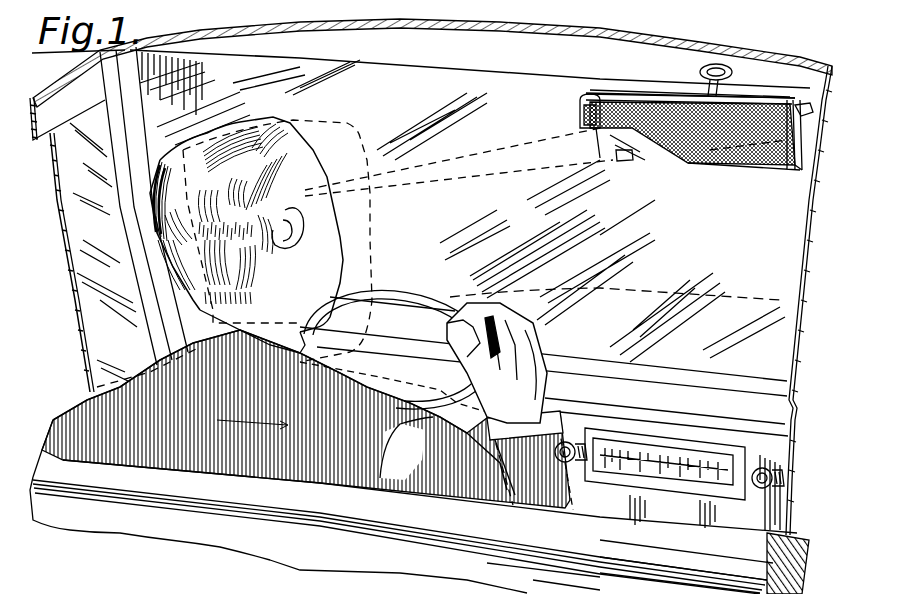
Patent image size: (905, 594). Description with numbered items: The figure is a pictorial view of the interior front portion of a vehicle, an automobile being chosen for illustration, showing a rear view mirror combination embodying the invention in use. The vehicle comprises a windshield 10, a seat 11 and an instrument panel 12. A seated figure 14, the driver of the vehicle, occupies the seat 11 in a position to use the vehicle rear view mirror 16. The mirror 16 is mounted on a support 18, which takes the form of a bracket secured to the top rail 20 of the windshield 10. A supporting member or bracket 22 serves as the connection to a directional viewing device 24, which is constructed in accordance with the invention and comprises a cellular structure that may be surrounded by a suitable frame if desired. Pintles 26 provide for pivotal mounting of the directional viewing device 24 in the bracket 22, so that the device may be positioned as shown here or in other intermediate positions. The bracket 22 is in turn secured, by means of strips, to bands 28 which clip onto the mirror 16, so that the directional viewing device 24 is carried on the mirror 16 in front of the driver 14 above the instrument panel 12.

The windshield 10 is at (760, 258).
The seat 11 is at (335, 553).
The instrument panel 12 is at (740, 430).
The seated figure 14 is at (107, 402).
The rear view mirror 16 is at (797, 170).
The support 18 is at (733, 80).
The top rail 20 is at (422, 53).
The bracket 22 is at (612, 86).
The directional viewing device 24 is at (575, 116).
The pintles 26 is at (799, 102).
The bands 28 is at (633, 162).